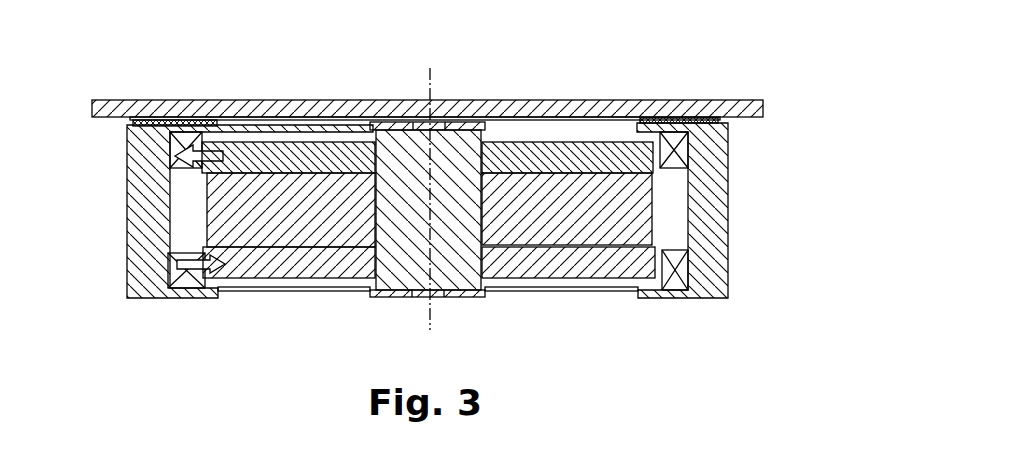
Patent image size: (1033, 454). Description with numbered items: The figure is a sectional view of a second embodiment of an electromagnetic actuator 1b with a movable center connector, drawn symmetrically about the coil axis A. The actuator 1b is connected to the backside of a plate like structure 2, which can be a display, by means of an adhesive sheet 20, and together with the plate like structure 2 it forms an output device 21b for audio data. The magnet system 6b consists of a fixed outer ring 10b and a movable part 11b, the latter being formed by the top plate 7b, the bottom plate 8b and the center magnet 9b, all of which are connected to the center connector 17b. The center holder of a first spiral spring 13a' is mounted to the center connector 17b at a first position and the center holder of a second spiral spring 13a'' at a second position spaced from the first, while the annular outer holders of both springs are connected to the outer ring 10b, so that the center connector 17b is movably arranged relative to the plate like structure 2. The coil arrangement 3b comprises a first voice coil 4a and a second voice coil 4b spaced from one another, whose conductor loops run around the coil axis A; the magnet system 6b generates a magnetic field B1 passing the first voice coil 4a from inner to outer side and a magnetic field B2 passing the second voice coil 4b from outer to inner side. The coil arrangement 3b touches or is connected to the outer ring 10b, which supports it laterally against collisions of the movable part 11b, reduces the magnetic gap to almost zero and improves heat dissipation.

The electromagnetic actuator 1b is at (465, 192).
The plate like structure 2 is at (185, 107).
The coil arrangement 3b is at (347, 211).
The first voice coil 4a is at (173, 148).
The second voice coil 4b is at (172, 272).
The magnet system 6b is at (465, 200).
The top plate 7b is at (642, 163).
The bottom plate 8b is at (635, 268).
The center magnet 9b is at (636, 215).
The outer ring 10b is at (708, 277).
The movable part 11b is at (535, 209).
The first spiral spring 13a' is at (425, 90).
The second spiral spring 13a'' is at (428, 316).
The center connector 17b is at (457, 145).
The adhesive sheet 20 is at (142, 122).
The output device 21b is at (445, 73).
The coil axis A is at (415, 193).
The magnetic field B1 is at (192, 155).
The magnetic field B2 is at (197, 265).